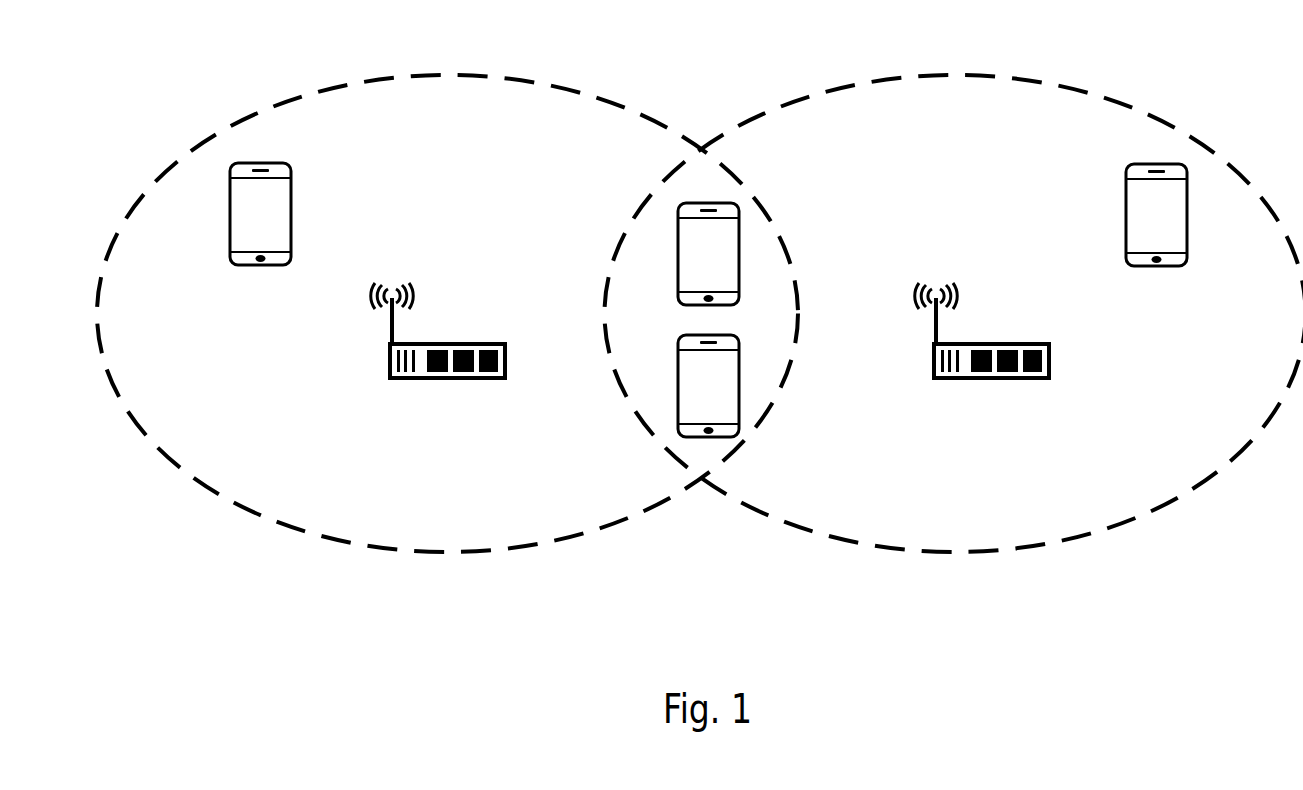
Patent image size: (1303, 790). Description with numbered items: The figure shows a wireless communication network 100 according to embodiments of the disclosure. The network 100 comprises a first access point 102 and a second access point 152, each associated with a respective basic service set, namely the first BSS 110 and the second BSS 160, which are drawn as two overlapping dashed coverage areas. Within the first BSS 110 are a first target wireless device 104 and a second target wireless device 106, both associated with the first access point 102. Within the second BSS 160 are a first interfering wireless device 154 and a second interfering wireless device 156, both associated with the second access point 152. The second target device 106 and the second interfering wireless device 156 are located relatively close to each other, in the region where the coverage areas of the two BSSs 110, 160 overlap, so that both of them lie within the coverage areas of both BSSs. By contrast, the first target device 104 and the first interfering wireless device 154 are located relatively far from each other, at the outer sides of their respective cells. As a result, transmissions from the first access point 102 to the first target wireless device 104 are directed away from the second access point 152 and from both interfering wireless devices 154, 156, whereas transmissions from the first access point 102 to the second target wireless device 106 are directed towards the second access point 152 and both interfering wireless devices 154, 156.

The wireless communication network 100 is at (700, 313).
The first access point 102 is at (390, 329).
The first target wireless device 104 is at (230, 207).
The second target wireless device 106 is at (681, 335).
The first basic service set 110 is at (507, 78).
The second access point 152 is at (935, 332).
The first interfering wireless device 154 is at (1126, 192).
The second interfering wireless device 156 is at (678, 254).
The second basic service set 160 is at (1100, 97).